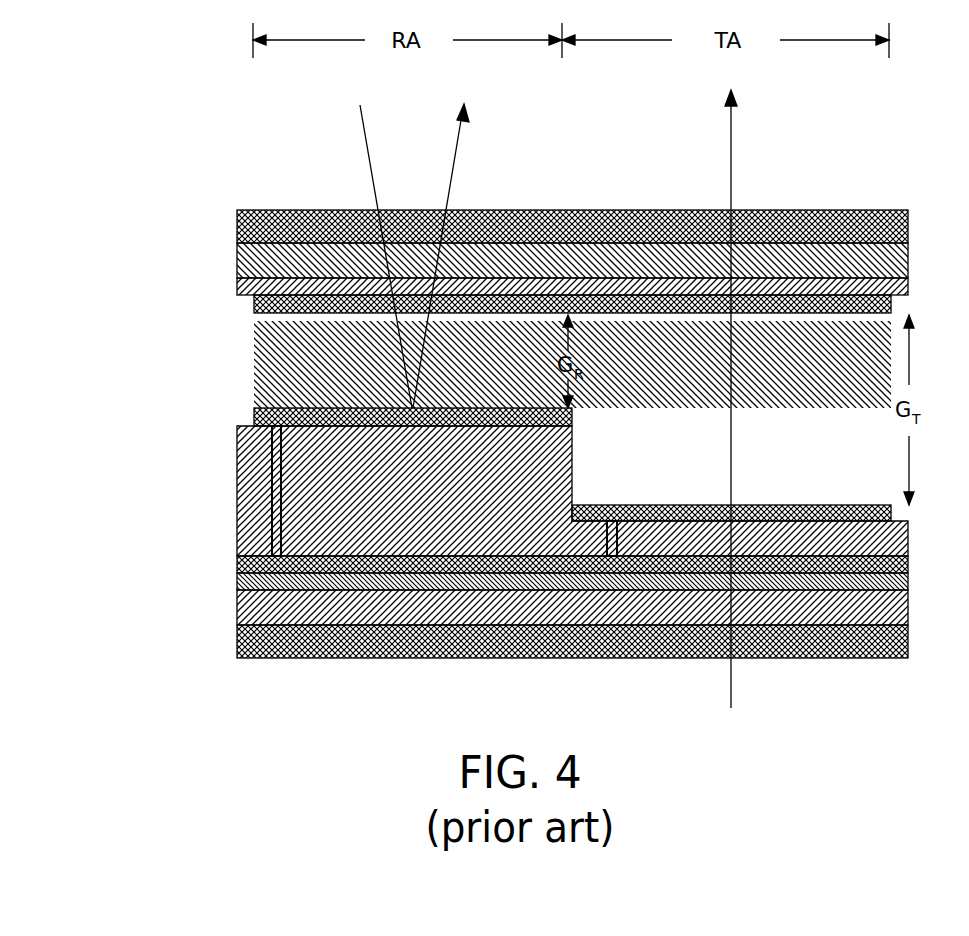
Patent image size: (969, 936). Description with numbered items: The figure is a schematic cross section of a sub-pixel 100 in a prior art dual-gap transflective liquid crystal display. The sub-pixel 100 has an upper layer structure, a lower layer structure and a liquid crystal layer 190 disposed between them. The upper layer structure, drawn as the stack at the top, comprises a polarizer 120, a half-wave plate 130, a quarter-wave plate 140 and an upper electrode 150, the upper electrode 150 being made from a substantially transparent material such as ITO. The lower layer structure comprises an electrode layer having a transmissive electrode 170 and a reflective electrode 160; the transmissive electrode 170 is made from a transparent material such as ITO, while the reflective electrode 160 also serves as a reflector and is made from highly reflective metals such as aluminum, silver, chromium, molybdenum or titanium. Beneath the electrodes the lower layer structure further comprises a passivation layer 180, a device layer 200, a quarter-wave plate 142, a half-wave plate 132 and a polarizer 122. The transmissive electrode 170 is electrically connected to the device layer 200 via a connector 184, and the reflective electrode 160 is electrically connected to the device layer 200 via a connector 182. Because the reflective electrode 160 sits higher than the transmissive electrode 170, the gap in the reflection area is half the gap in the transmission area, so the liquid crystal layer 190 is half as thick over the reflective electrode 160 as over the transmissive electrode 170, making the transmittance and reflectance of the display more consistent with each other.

The sub-pixel 100 is at (145, 211).
The polarizer 120 is at (229, 207).
The half-wave plate 130 is at (229, 252).
The quarter-wave plate 140 is at (229, 277).
The upper electrode 150 is at (246, 297).
The liquid crystal layer 190 is at (222, 374).
The reflective electrode 160 is at (450, 400).
The passivation layer 180 is at (229, 487).
The connector 182 is at (275, 495).
The connector 184 is at (599, 530).
The transmissive electrode 170 is at (793, 497).
The device layer 200 is at (229, 553).
The quarter-wave plate 142 is at (229, 573).
The half-wave plate 132 is at (229, 591).
The polarizer 122 is at (229, 626).